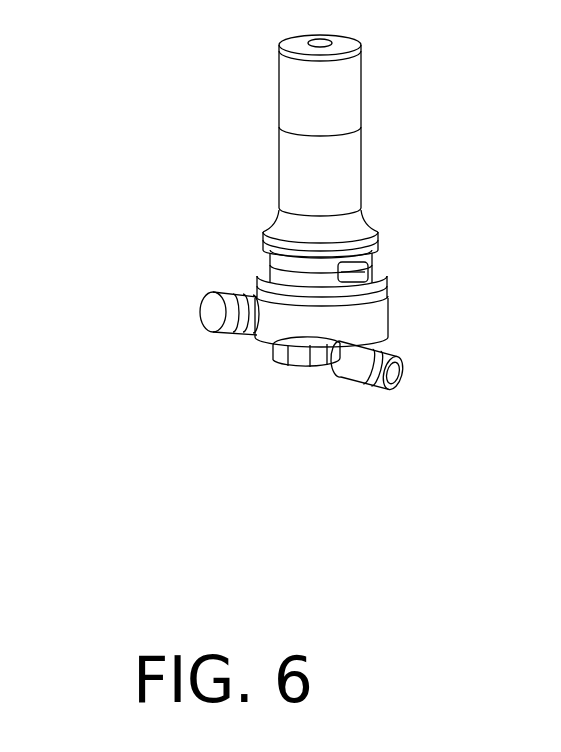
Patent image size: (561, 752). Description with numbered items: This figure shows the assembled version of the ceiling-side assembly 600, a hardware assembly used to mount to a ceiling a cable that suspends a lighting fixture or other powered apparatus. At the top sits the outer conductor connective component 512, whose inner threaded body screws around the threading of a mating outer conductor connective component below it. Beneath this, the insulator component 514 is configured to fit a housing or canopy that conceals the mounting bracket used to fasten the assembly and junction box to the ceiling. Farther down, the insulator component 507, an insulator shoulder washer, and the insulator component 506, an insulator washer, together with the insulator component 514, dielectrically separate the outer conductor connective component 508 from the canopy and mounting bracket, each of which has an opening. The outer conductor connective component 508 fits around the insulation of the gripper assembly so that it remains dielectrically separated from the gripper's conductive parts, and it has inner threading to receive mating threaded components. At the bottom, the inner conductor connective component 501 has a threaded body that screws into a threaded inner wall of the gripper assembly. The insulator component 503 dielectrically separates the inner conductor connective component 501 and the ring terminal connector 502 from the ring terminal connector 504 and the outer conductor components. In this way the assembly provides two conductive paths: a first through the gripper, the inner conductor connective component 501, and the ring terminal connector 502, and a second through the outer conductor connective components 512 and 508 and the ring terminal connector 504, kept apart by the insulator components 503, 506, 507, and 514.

The ceiling-side assembly 600 is at (165, 110).
The outer conductor connective component 512 is at (362, 80).
The insulator component 514 is at (362, 165).
The outer conductor connective component 508 is at (352, 268).
The insulator component 507 is at (385, 283).
The insulator component 506 is at (390, 313).
The ring terminal connector 504 is at (210, 293).
The inner conductor connective component 501 is at (275, 359).
The ring terminal connector 502 is at (405, 389).
The insulator component 503 is at (365, 344).